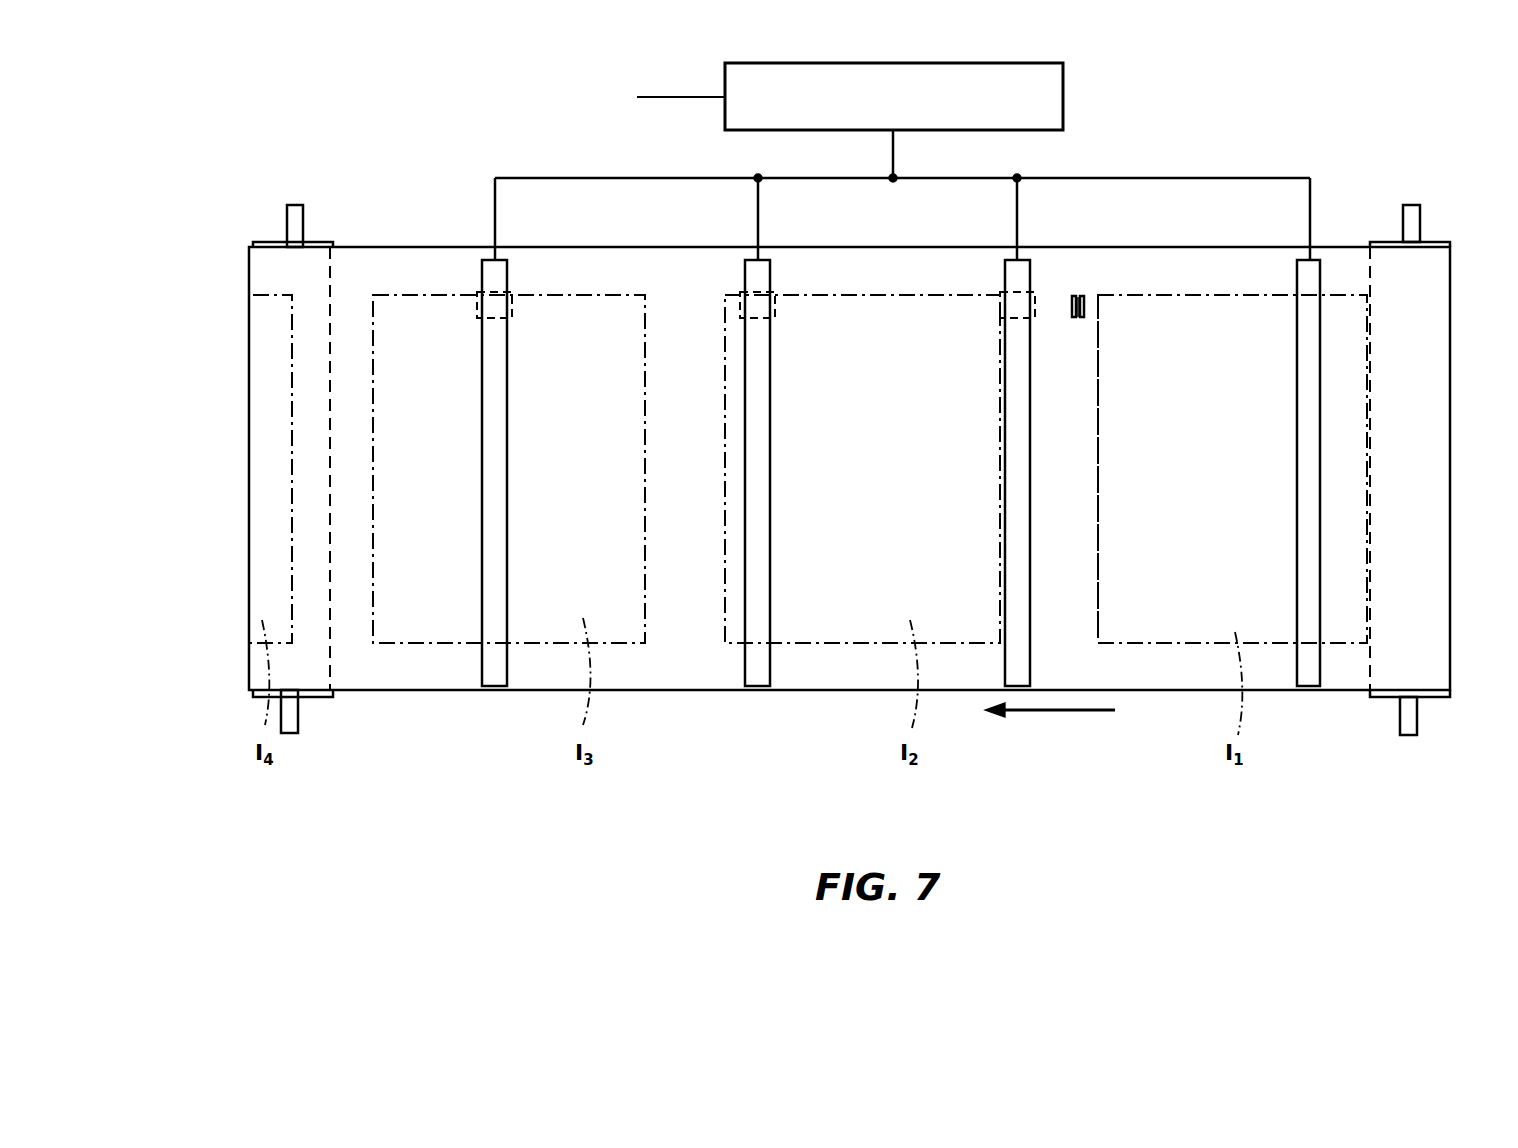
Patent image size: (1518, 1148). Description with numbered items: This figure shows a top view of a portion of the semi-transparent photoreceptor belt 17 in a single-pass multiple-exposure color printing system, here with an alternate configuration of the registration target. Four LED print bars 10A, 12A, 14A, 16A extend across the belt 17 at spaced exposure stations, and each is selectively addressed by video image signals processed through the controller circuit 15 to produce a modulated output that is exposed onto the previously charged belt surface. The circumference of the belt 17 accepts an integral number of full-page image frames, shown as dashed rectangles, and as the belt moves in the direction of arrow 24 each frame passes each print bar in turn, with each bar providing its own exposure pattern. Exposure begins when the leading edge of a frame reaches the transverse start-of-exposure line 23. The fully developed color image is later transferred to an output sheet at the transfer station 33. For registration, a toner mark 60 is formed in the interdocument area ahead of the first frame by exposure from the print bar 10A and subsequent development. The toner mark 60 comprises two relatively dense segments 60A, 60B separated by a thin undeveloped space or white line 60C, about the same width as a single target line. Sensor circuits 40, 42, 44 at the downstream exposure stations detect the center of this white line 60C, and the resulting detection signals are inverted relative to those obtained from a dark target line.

The controller circuit 15 is at (1055, 105).
The photoreceptor belt 17 is at (660, 692).
The transfer station 33 is at (225, 660).
The LED print bar 16A is at (497, 507).
The LED print bar 14A is at (762, 490).
The LED print bar 12A is at (1017, 400).
The LED print bar 10A is at (1300, 505).
The sensor circuit 44 is at (478, 295).
The sensor circuit 42 is at (778, 297).
The sensor circuit 40 is at (990, 300).
The toner mark 60 is at (1102, 290).
The dense segment 60A is at (1072, 300).
The dense segment 60B is at (1085, 303).
The undeveloped line 60C is at (1076, 318).
The start-of-exposure line 23 is at (1098, 470).
The arrow 24 is at (1063, 712).